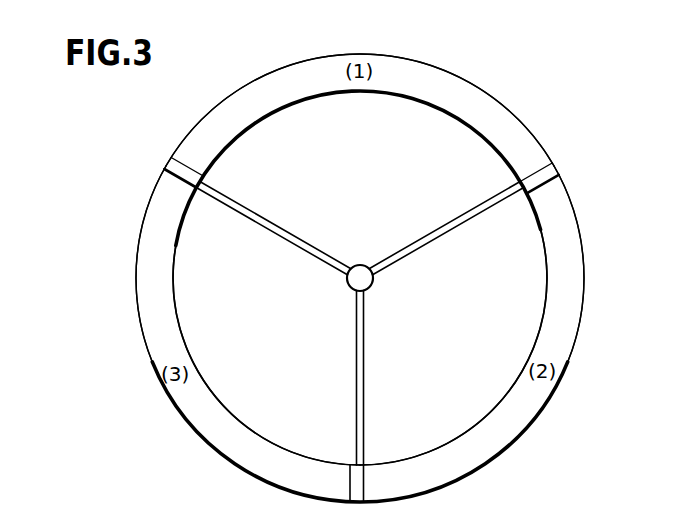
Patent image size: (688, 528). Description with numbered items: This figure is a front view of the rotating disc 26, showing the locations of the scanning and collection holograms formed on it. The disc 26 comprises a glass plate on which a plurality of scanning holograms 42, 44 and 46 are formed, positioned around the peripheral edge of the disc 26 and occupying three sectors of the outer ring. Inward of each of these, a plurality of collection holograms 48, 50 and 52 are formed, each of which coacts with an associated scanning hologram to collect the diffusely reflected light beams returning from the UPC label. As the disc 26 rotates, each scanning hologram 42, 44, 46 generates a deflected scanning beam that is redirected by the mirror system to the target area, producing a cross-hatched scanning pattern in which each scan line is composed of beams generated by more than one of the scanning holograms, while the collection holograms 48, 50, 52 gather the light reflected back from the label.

The rotating disc 26 is at (294, 62).
The scanning hologram 42 is at (467, 97).
The scanning hologram 44 is at (530, 404).
The scanning hologram 46 is at (250, 458).
The collection hologram 48 is at (242, 155).
The collection hologram 50 is at (233, 395).
The collection hologram 52 is at (450, 430).